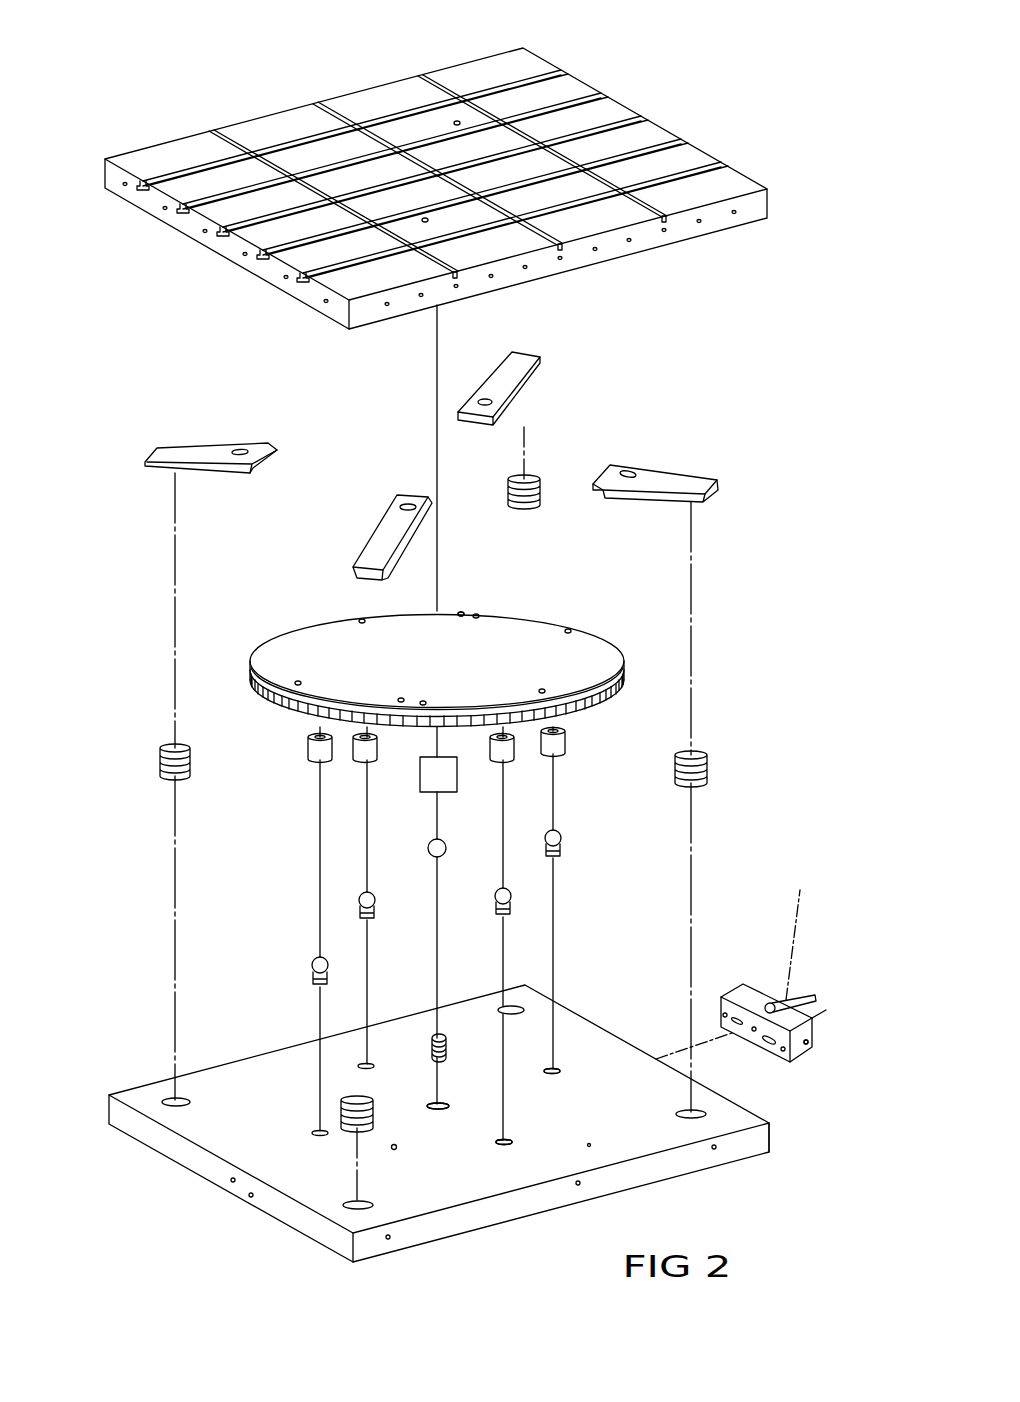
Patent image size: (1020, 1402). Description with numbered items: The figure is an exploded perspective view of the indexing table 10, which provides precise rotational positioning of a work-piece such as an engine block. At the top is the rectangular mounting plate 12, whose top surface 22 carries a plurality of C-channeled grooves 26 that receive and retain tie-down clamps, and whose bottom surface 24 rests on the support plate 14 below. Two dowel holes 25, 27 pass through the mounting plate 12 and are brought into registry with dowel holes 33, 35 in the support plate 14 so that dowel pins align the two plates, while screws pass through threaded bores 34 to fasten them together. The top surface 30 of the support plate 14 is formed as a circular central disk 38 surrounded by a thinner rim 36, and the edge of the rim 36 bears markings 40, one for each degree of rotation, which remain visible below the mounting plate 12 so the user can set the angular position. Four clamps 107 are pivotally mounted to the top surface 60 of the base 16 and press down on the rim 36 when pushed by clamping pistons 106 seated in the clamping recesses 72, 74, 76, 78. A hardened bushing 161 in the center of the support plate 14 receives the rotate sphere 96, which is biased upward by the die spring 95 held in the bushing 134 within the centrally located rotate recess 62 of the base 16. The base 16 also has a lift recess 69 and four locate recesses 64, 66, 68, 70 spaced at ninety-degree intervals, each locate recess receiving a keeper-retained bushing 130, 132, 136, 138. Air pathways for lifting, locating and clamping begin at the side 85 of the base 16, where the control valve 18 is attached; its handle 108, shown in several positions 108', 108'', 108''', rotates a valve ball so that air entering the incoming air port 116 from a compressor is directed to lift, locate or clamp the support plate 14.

The indexing table 10 is at (656, 94).
The mounting plate 12 is at (234, 120).
The top surface 22 is at (483, 72).
The bottom surface 24 is at (650, 248).
The dowel hole 25 is at (428, 221).
The C-channeled grooves 26 is at (176, 170).
The dowel hole 27 is at (455, 120).
The clamp 107 is at (178, 452).
The support plate 14 is at (598, 633).
The top surface 30 is at (297, 627).
The dowel hole 33 is at (462, 612).
The threaded bores 34 is at (600, 670).
The dowel hole 35 is at (423, 701).
The rim 36 is at (258, 683).
The central disk 38 is at (280, 648).
The markings 40 is at (588, 707).
The clamping piston 106 is at (158, 763).
The rotate sphere 96 is at (431, 841).
The hardened bushing 161 is at (455, 797).
The die spring 95 is at (434, 1036).
The locate recess 70 is at (360, 1064).
The clamping recess 76 is at (515, 1006).
The clamping recess 78 is at (160, 1098).
The bushing 132 is at (370, 1068).
The base 16 is at (150, 1144).
The locate recess 64 is at (312, 1133).
The bushing 130 is at (312, 1137).
The clamping recess 72 is at (343, 1206).
The lift recess 69 is at (394, 1151).
The rotate recess 62 is at (430, 1108).
The bushing 134 is at (458, 1108).
The locate recess 66 is at (509, 1143).
The bushing 136 is at (513, 1133).
The top surface 60 is at (590, 1145).
The locate recess 68 is at (558, 1070).
The bushing 138 is at (556, 1070).
The clamping recess 74 is at (706, 1112).
The side 85 is at (768, 1136).
The control valve 18 is at (772, 983).
The handle 108 is at (823, 926).
The lever axis 108' is at (794, 936).
The lever pivot 108'' is at (770, 1008).
The lever end 108''' is at (852, 989).
The incoming air port 116 is at (808, 1047).